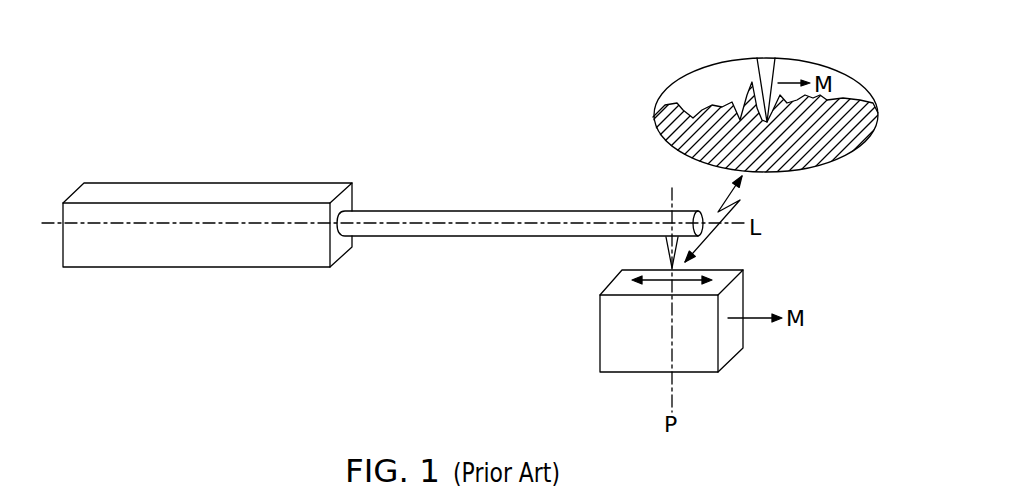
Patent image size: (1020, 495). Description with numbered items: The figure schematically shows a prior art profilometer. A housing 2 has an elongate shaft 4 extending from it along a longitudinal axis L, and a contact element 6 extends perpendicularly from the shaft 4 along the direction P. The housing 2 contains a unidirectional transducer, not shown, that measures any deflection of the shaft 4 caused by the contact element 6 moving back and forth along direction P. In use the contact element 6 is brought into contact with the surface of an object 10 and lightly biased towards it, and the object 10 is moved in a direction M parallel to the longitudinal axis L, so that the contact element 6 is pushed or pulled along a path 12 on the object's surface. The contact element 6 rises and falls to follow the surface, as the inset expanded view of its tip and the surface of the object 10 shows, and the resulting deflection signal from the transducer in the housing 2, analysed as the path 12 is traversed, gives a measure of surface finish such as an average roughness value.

The housing 2 is at (233, 196).
The elongate shaft 4 is at (459, 210).
The contact element 6 is at (663, 240).
The object 10 is at (734, 356).
The path 12 is at (693, 278).